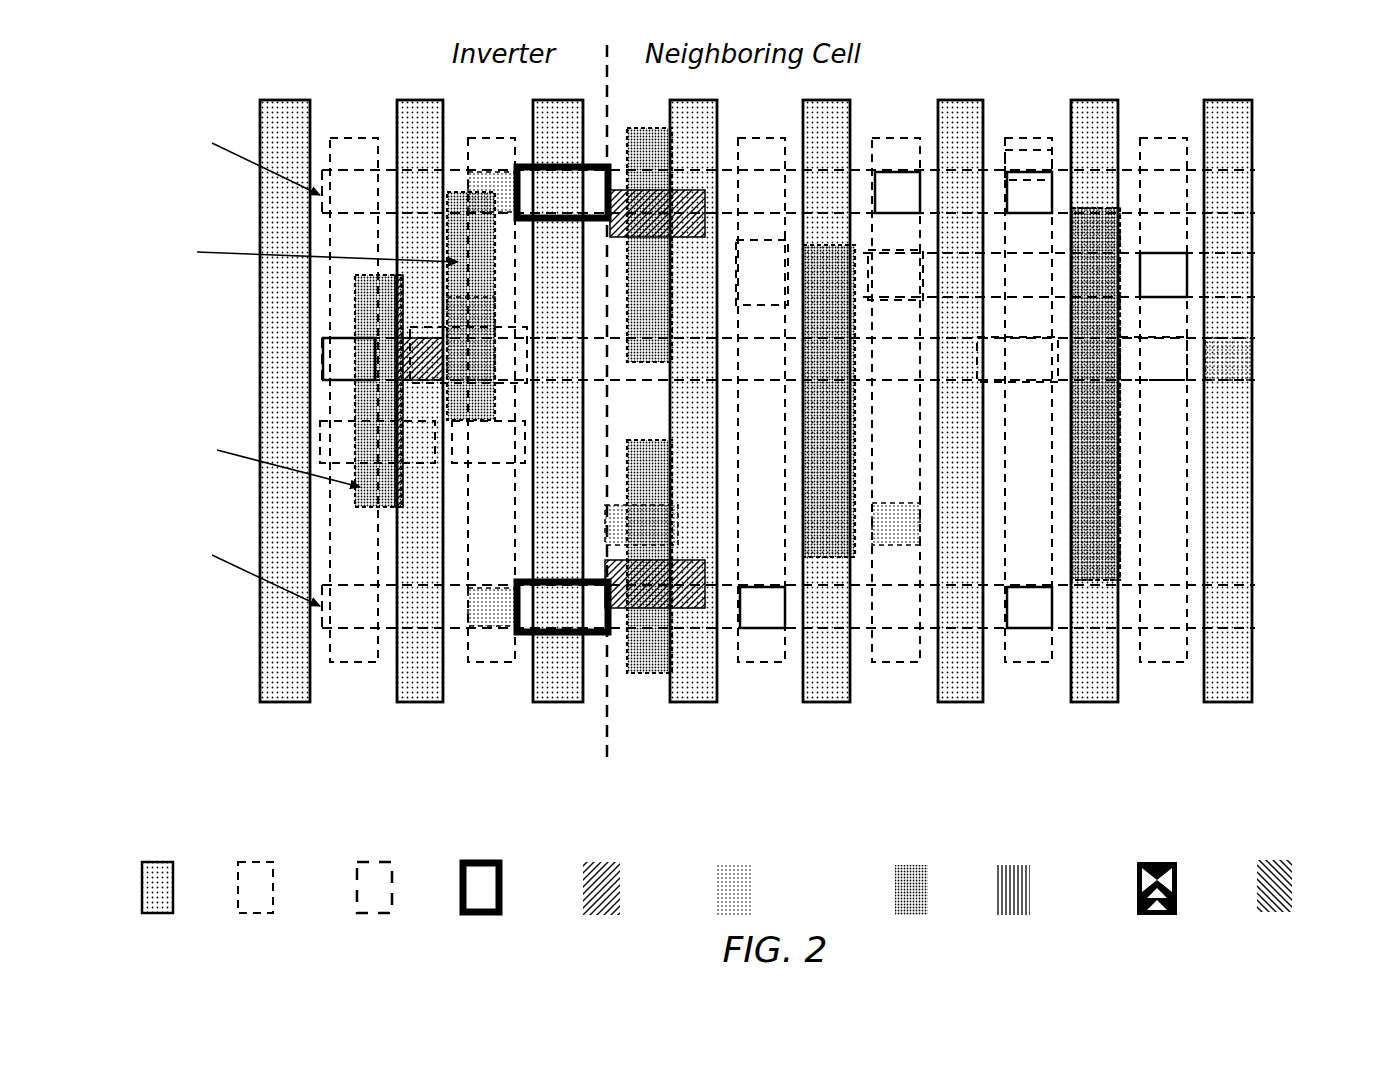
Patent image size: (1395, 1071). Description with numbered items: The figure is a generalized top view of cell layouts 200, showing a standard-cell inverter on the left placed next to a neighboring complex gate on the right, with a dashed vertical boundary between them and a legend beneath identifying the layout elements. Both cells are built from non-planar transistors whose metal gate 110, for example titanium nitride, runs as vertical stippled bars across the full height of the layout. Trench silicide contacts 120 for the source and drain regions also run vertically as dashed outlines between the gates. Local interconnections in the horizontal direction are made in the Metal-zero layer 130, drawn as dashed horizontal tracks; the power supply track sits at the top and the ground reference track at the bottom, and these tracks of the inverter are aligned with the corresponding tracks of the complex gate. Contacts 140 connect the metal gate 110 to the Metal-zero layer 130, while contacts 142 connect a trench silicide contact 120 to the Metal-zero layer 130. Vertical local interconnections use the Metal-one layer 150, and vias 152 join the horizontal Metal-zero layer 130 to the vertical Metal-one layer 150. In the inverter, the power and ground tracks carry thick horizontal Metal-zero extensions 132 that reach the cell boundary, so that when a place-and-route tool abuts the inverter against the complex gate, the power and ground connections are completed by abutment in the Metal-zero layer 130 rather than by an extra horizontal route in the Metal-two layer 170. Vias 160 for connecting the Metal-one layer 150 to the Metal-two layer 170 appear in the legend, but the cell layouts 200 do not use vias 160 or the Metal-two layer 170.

The metal gate 110 is at (162, 862).
The trench silicide contact 120 is at (258, 862).
The metal 0 130 is at (375, 862).
The M0 extension 132 is at (478, 860).
The contact 140 is at (601, 862).
The contact 142 is at (733, 865).
The metal 1 150 is at (910, 865).
The via 152 is at (1010, 865).
The via 160 is at (1152, 862).
The metal 2 170 is at (1280, 860).
The cell layouts 200 is at (1285, 128).